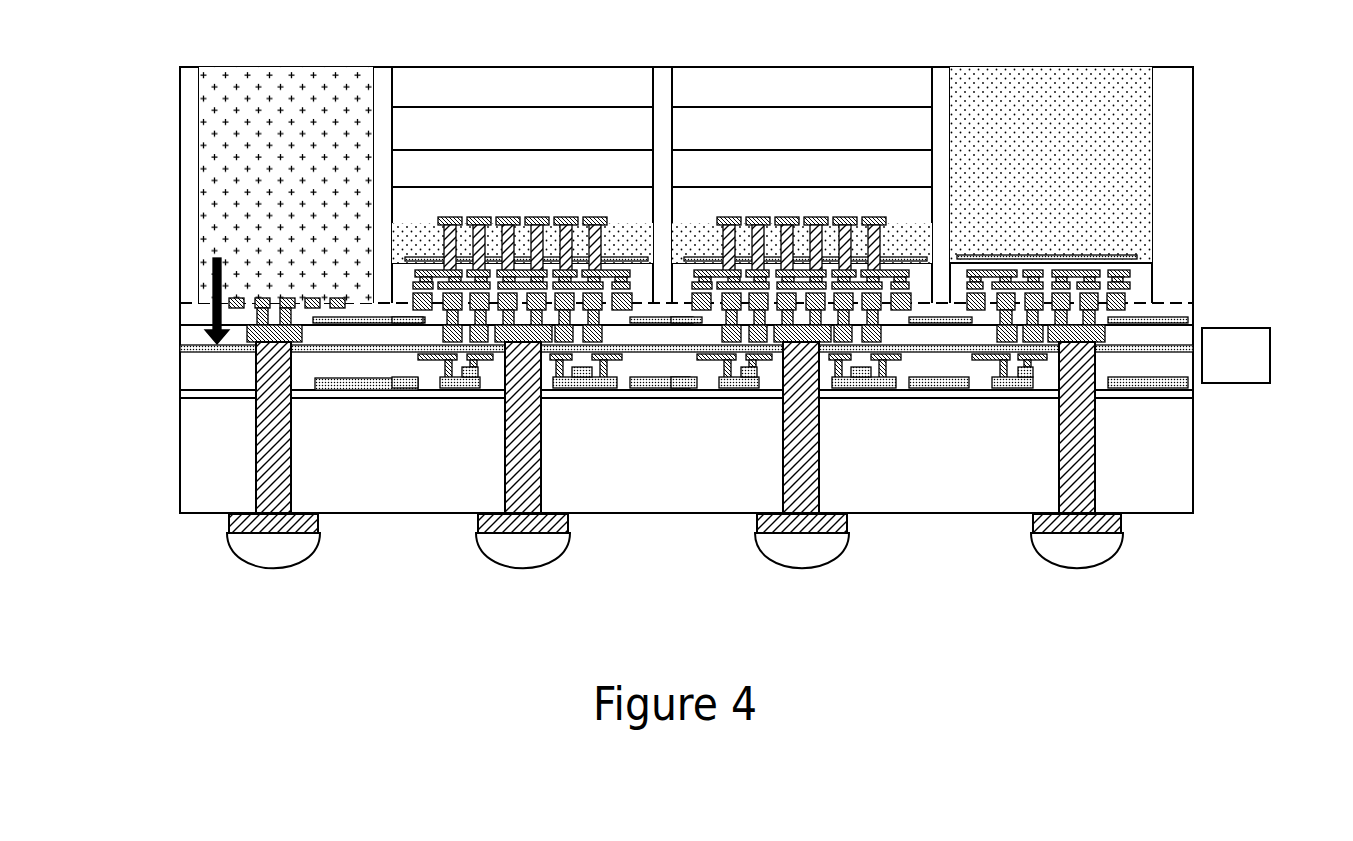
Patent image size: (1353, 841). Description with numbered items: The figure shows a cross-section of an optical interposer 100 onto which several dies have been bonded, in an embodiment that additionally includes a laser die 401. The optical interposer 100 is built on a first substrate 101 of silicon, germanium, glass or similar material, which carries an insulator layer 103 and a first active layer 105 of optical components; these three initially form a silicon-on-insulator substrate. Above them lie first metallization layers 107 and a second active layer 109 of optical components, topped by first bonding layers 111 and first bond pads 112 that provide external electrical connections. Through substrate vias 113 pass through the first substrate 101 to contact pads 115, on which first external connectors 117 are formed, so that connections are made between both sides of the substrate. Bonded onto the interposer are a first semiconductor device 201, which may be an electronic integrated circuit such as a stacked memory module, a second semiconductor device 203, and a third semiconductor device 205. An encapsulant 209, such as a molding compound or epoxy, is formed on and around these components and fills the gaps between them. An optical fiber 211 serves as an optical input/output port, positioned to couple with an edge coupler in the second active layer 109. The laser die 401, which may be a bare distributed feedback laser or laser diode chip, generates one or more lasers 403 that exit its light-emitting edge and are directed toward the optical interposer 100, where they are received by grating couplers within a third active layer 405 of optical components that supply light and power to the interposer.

The optical interposer 100 is at (80, 305).
The first substrate 101 is at (1175, 472).
The insulator layer 103 is at (1175, 383).
The first active layer 105 is at (203, 392).
The first metallization layers 107 is at (188, 375).
The second active layer 109 is at (355, 323).
The first bonding layers 111 is at (1178, 248).
The first bond pads 112 is at (1125, 300).
The through substrate vias 113 is at (805, 457).
The contact pads 115 is at (837, 525).
The first external connectors 117 is at (552, 547).
The first semiconductor device 201 is at (520, 80).
The second semiconductor device 203 is at (787, 80).
The third semiconductor device 205 is at (1060, 80).
The encapsulant 209 is at (188, 97).
The optical fiber 211 is at (1250, 357).
The laser die 401 is at (282, 80).
The lasers 403 is at (212, 268).
The third active layer 405 is at (180, 350).